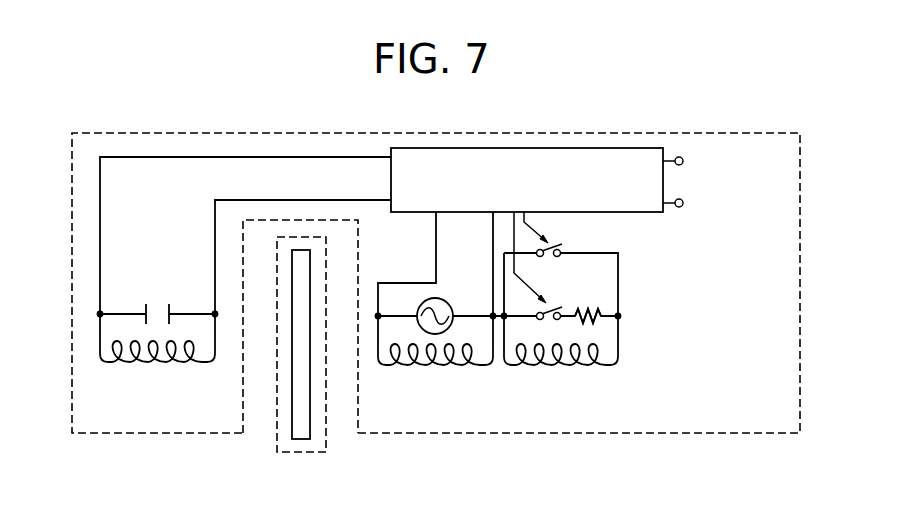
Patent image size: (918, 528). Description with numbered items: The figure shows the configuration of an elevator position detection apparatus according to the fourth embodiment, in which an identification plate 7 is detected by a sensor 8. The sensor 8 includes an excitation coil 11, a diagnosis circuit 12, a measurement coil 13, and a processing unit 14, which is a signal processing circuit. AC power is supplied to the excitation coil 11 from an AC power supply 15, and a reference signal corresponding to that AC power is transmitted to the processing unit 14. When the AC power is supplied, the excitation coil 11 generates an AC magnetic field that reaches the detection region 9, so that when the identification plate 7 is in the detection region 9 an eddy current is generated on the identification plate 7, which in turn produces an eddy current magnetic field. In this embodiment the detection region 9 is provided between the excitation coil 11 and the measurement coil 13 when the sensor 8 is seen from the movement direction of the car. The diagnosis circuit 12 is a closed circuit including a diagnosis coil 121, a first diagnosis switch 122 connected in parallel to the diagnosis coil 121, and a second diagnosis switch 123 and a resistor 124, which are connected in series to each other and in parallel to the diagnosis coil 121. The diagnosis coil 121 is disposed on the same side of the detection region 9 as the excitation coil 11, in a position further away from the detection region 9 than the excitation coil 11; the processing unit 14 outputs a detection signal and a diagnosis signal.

The identification plate 7 is at (292, 413).
The sensor 8 is at (668, 133).
The detection region 9 is at (344, 438).
The excitation coil 11 is at (428, 368).
The diagnosis circuit 12 is at (594, 314).
The measurement coil 13 is at (145, 365).
The processing unit 14 is at (648, 212).
The AC power supply 15 is at (443, 297).
The diagnosis coil 121 is at (552, 368).
The first diagnosis switch 122 is at (561, 247).
The second diagnosis switch 123 is at (553, 307).
The resistor 124 is at (588, 310).